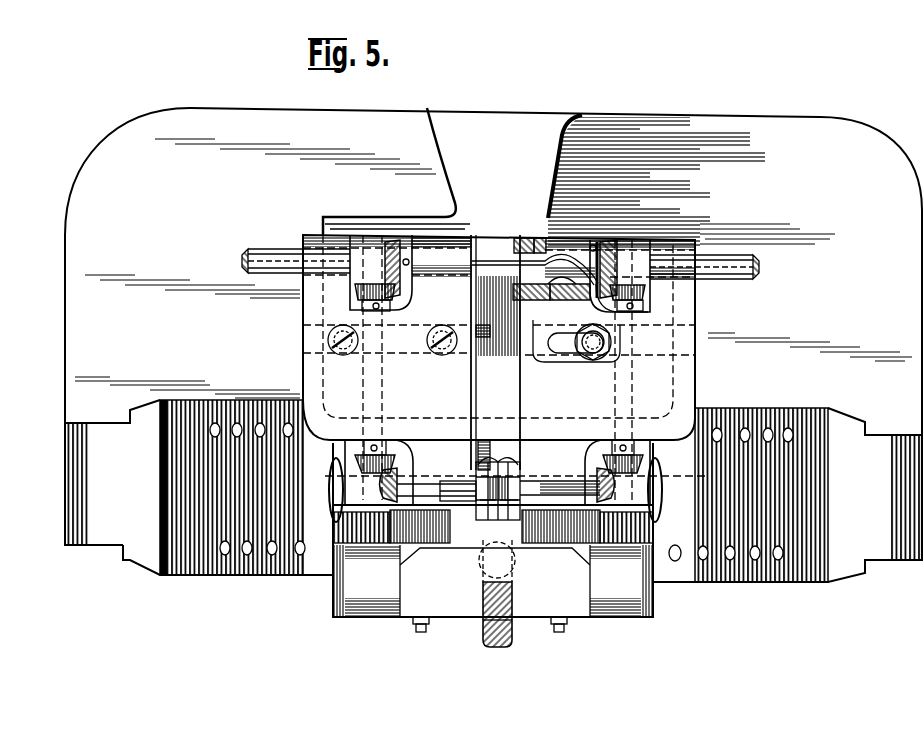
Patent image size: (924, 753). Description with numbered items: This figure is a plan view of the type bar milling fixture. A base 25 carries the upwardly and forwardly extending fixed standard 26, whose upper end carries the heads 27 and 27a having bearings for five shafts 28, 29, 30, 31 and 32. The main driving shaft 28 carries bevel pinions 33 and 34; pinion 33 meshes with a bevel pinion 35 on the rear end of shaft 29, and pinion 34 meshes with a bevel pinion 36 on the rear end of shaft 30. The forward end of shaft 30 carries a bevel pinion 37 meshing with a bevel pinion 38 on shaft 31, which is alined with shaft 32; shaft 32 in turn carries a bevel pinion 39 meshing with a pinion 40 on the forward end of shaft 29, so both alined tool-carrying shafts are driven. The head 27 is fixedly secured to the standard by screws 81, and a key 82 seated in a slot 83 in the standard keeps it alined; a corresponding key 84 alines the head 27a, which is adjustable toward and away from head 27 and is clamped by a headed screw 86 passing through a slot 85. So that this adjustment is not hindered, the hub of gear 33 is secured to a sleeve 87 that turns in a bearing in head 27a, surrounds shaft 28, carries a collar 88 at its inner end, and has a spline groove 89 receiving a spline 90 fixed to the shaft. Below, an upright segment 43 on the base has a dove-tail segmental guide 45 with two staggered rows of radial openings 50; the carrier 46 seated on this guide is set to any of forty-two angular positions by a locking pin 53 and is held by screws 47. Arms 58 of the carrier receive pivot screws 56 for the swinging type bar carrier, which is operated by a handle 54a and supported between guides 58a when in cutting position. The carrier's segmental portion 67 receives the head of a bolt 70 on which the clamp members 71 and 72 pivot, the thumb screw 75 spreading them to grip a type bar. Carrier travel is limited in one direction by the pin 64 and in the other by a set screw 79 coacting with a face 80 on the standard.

The base 25 is at (295, 151).
The standard 26 is at (503, 158).
The head 27 is at (499, 367).
The head 27a is at (541, 323).
The main driving shaft 28 is at (290, 250).
The shaft 29 is at (630, 383).
The shaft 30 is at (382, 362).
The shaft 31 is at (430, 477).
The shaft 32 is at (553, 478).
The bevel pinion 33 is at (618, 248).
The bevel pinion 34 is at (398, 240).
The bevel pinion 35 is at (642, 300).
The bevel pinion 36 is at (362, 289).
The bevel pinion 37 is at (352, 450).
The bevel pinion 38 is at (390, 487).
The bevel pinion 39 is at (605, 487).
The bevel pinion 40 is at (640, 452).
The upright segment 43 is at (96, 546).
The segmental guide 45 is at (150, 570).
The support or carrier 46 is at (622, 618).
The screws 47 is at (489, 633).
The openings 50 is at (217, 424).
The locking pin 53 is at (485, 566).
The handle 54a is at (493, 644).
The pivot screws 56 is at (332, 490).
The arms 58 is at (385, 578).
The guides and supports 58a is at (541, 573).
The pin 64 is at (481, 590).
The segmental portion 67 is at (465, 545).
The bolt 70 is at (512, 460).
The clamp member 71 is at (481, 513).
The clamp member 72 is at (518, 513).
The thumb screw 75 is at (447, 485).
The set screw 79 is at (490, 446).
The face 80 is at (522, 422).
The screws 81 is at (343, 352).
The key 82 is at (477, 362).
The slot 83 is at (499, 330).
The key 84 is at (518, 355).
The slot 85 is at (560, 352).
The headed screw 86 is at (596, 352).
The sleeve 87 is at (538, 262).
The collar 88 is at (515, 246).
The spline groove 89 is at (520, 286).
The spline 90 is at (598, 297).